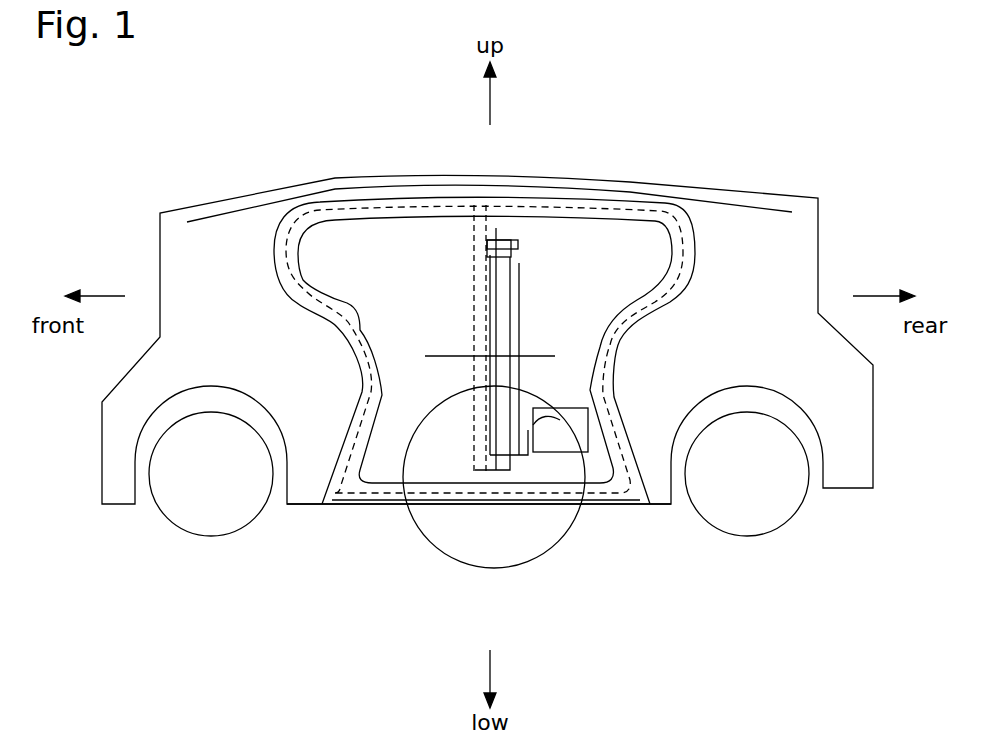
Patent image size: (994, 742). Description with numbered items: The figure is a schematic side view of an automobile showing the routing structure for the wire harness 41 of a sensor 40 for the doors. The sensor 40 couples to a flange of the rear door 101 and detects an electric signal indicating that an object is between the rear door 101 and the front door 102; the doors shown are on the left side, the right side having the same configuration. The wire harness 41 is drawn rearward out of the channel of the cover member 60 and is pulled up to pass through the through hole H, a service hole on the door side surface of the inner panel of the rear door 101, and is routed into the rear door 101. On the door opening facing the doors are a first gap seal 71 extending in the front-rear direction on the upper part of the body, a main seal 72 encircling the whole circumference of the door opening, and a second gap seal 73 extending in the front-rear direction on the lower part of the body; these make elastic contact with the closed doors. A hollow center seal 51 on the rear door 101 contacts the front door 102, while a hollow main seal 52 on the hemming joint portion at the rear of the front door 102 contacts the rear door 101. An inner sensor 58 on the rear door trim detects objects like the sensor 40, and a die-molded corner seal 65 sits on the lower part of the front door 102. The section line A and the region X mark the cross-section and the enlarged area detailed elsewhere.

The first gap seal 71 is at (346, 178).
The main seal 72 is at (343, 223).
The second gap seal 73 is at (355, 501).
The rear door 101 is at (658, 205).
The front door 102 is at (298, 207).
The sensor 40 is at (475, 297).
The wire harness 41 is at (577, 501).
The center seal 51 is at (495, 272).
The main seal 52 is at (512, 333).
The inner sensor 58 is at (520, 298).
The cover member 60 is at (538, 470).
The corner seal 65 is at (487, 472).
The through hole H is at (588, 430).
The section line A- A is at (488, 357).
The enlarged region X is at (433, 546).